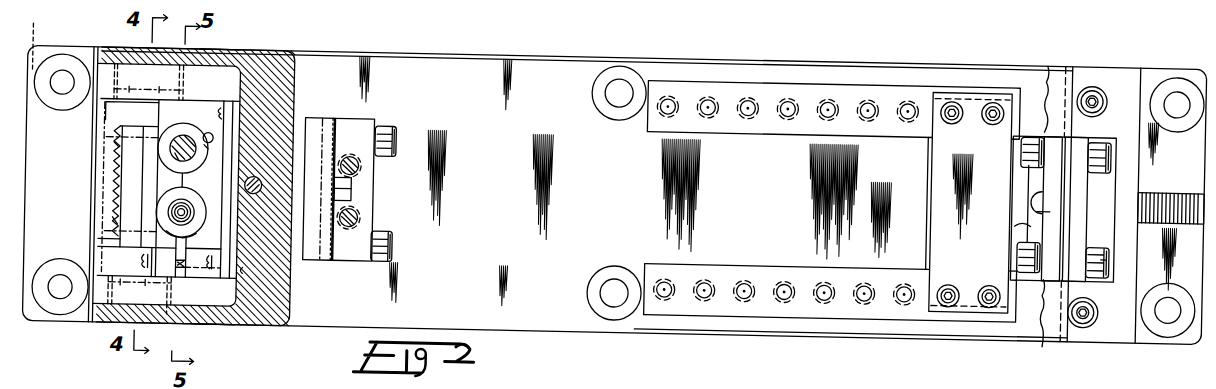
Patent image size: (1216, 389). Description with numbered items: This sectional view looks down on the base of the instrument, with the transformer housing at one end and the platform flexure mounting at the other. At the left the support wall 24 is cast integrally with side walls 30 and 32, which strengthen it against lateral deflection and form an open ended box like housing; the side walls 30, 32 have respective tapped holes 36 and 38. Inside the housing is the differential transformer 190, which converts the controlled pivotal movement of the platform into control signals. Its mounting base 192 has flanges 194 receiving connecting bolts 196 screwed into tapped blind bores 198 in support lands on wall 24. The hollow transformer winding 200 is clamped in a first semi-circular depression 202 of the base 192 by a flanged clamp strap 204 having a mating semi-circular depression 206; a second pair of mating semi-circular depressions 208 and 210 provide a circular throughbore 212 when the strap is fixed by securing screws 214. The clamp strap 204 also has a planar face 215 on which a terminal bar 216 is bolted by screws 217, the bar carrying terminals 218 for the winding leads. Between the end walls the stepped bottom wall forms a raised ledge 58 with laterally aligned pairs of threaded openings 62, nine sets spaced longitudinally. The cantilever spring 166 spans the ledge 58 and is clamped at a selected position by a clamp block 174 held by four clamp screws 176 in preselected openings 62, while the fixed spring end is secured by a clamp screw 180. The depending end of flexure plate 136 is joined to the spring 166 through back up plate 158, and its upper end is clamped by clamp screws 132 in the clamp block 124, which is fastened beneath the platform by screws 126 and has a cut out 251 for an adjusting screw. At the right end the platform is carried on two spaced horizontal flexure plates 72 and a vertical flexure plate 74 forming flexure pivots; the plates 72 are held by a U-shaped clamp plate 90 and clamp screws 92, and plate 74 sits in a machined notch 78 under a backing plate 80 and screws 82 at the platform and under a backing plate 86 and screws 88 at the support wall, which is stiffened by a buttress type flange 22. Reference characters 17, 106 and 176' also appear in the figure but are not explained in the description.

The mounting holes 17 is at (60, 297).
The buttress type flange 22 is at (1175, 170).
The support wall 24 is at (297, 87).
The side wall 30 is at (207, 53).
The side wall 32 is at (211, 318).
The tapped hole 36 is at (183, 58).
The tapped hole 38 is at (172, 312).
The ledge 58 is at (757, 262).
The threaded openings 62 is at (752, 101).
The flexure plates 72 is at (1055, 48).
The flexure plate 74 is at (1066, 200).
The machined notch 78 is at (1020, 208).
The backing plate 80 is at (1088, 171).
The screws 82 is at (1108, 239).
The backing plate 86 is at (1040, 192).
The screws 88 is at (1023, 130).
The clamp plate 90 is at (1138, 49).
The clamp screws 92 is at (1102, 73).
The pin 106 is at (256, 172).
The clamp block 124 is at (377, 190).
The screws 126 is at (362, 158).
The clamp screws 132 is at (394, 126).
The flexure plate 136 is at (341, 122).
The back up plate 158 is at (314, 246).
The cantilever spring 166 is at (778, 200).
The clamp block 174 is at (946, 151).
The clamp screws 176 is at (969, 282).
The screws 176' is at (973, 95).
The clamp screw 180 is at (1034, 171).
The differential transformer 190 is at (186, 194).
The mounting base 192 is at (170, 100).
The flanges 194 is at (228, 108).
The connecting bolts 196 is at (167, 290).
The tapped blind bores 198 is at (247, 270).
The transformer winding 200 is at (222, 207).
The semi-circular depression 202 is at (190, 234).
The clamp strap 204 is at (140, 156).
The semi-circular depression 206 is at (200, 224).
The semi-circular depression 208 is at (217, 146).
The semi-circular depression 210 is at (157, 158).
The throughbore 212 is at (188, 120).
The securing screws 214 is at (148, 254).
The planar face 215 is at (124, 146).
The terminal bar 216 is at (116, 220).
The screws 217 is at (115, 127).
The terminals 218 is at (114, 211).
The cut out 251 is at (355, 182).